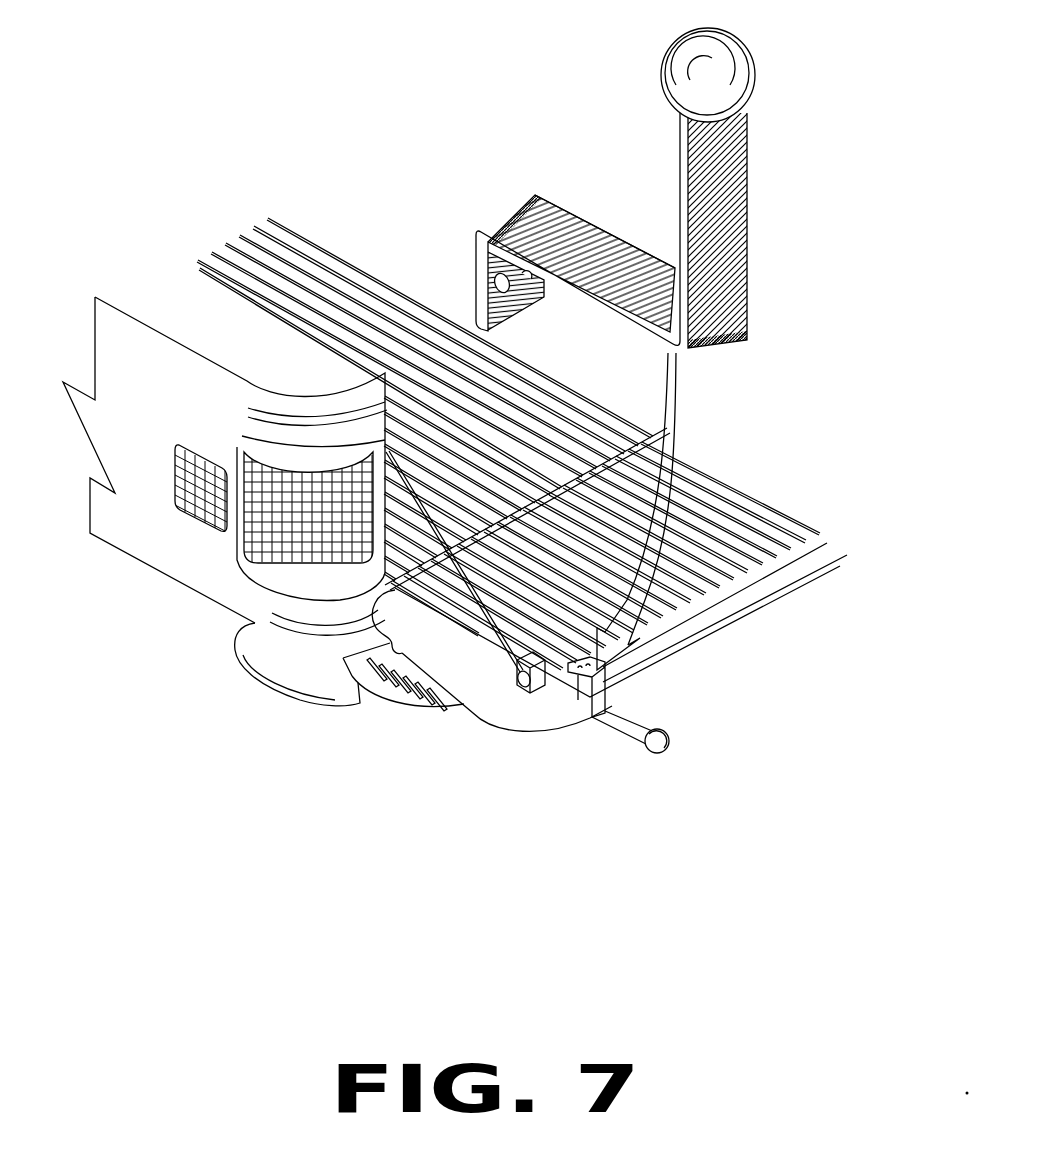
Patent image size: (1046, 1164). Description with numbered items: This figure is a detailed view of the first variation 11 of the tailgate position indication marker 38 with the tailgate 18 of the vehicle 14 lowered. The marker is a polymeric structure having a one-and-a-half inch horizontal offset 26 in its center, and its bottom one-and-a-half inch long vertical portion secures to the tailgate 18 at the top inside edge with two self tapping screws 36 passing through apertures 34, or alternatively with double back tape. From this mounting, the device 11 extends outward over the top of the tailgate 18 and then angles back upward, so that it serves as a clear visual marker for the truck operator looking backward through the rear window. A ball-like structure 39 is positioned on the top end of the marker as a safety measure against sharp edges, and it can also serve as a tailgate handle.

The first embodiment/variation 11 is at (606, 427).
The vehicle 14 is at (193, 313).
The tailgate 18 is at (737, 624).
The horizontal offset 26 is at (620, 233).
The apertures 34 is at (498, 280).
The self tapping screws 36 is at (535, 702).
The tailgate position indication marker 38 is at (663, 77).
The ball-like structure 39 is at (757, 87).